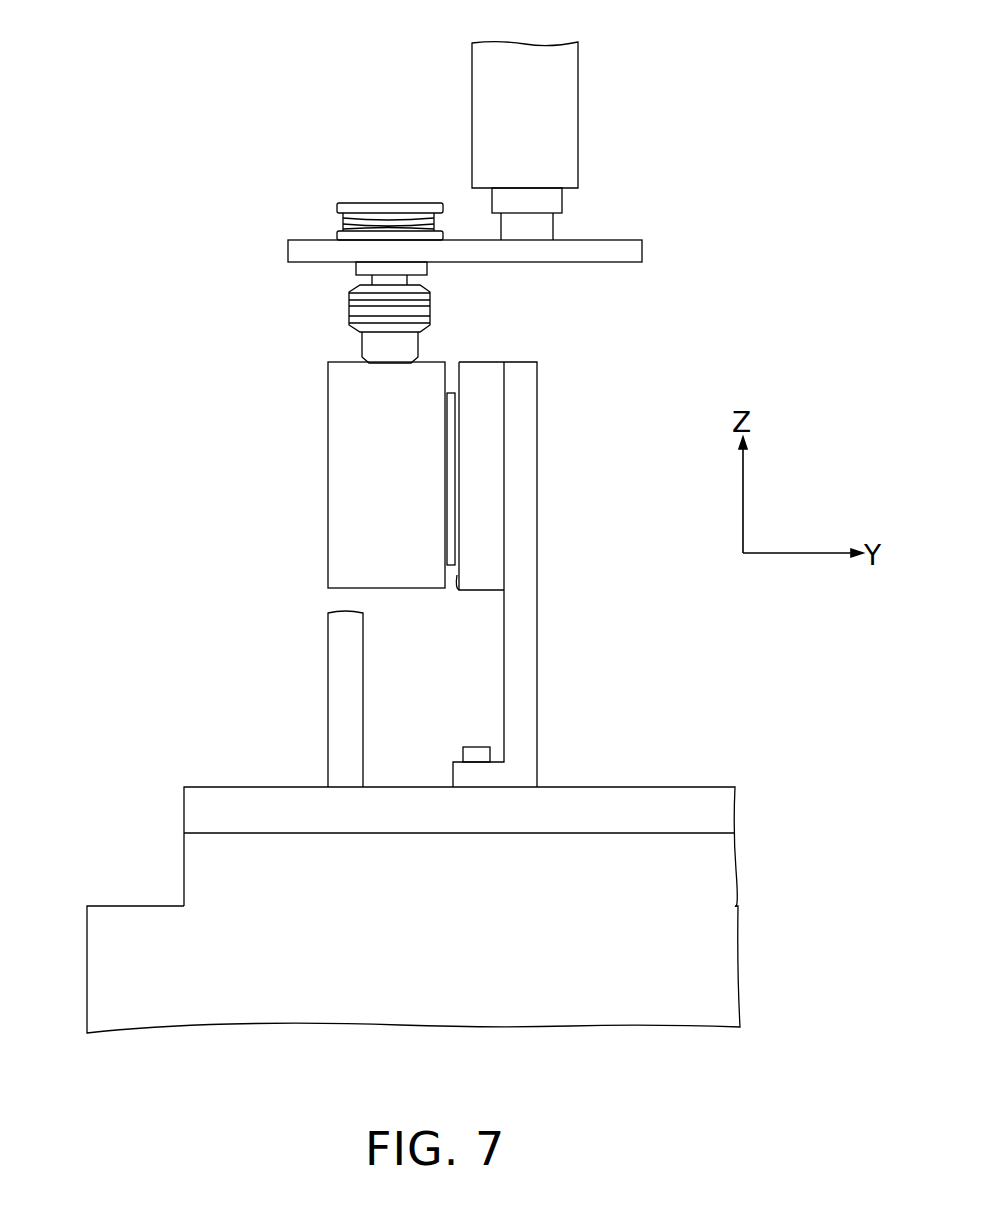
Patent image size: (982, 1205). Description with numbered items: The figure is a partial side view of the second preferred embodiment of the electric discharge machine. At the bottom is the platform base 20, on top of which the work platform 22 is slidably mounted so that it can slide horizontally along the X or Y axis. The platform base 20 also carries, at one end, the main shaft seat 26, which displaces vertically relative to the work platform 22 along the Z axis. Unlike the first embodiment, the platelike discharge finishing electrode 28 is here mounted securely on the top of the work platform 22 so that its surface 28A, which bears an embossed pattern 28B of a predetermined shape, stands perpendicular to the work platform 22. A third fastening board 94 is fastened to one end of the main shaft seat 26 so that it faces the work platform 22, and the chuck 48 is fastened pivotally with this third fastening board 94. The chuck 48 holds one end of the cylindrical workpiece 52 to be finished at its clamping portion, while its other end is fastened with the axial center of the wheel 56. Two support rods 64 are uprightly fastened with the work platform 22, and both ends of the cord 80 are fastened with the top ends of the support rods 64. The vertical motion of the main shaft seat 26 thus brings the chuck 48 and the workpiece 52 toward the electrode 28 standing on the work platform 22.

The platform base 20 is at (140, 918).
The work platform 22 is at (612, 808).
The main shaft seat 26 is at (550, 127).
The discharge finishing electrode 28 is at (490, 515).
The surface 28A is at (457, 573).
The embossed pattern 28B is at (455, 460).
The chuck 48 is at (348, 305).
The cylindrical workpiece 52 is at (347, 472).
The wheel 56 is at (378, 205).
The support rods 64 is at (337, 657).
The cord 80 is at (350, 220).
The third fastening board 94 is at (589, 255).